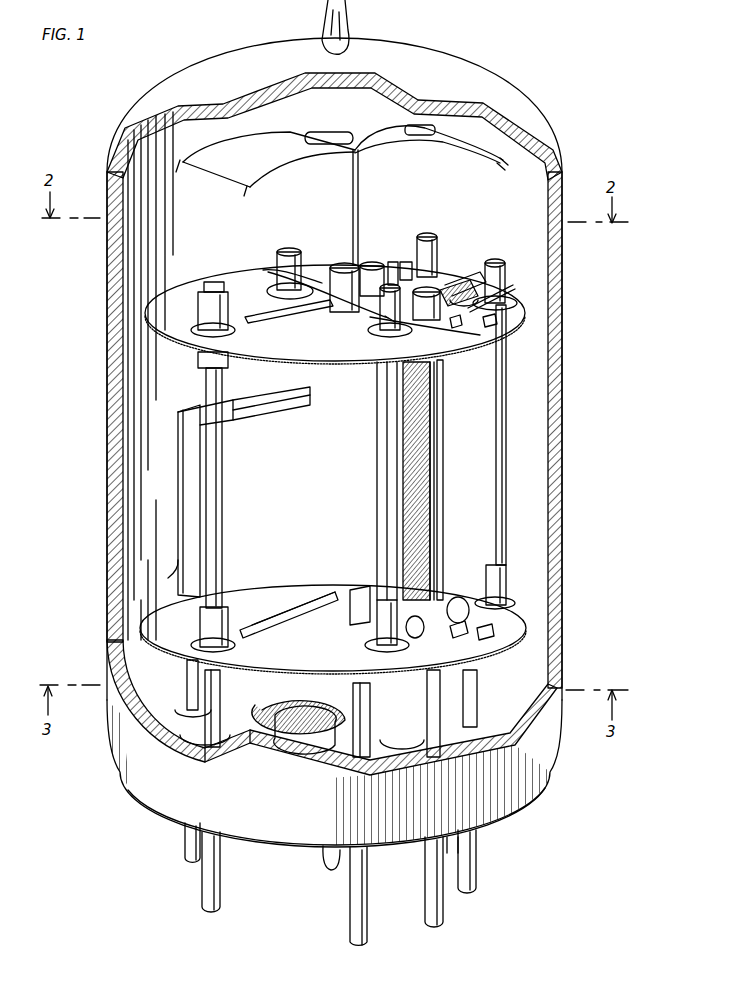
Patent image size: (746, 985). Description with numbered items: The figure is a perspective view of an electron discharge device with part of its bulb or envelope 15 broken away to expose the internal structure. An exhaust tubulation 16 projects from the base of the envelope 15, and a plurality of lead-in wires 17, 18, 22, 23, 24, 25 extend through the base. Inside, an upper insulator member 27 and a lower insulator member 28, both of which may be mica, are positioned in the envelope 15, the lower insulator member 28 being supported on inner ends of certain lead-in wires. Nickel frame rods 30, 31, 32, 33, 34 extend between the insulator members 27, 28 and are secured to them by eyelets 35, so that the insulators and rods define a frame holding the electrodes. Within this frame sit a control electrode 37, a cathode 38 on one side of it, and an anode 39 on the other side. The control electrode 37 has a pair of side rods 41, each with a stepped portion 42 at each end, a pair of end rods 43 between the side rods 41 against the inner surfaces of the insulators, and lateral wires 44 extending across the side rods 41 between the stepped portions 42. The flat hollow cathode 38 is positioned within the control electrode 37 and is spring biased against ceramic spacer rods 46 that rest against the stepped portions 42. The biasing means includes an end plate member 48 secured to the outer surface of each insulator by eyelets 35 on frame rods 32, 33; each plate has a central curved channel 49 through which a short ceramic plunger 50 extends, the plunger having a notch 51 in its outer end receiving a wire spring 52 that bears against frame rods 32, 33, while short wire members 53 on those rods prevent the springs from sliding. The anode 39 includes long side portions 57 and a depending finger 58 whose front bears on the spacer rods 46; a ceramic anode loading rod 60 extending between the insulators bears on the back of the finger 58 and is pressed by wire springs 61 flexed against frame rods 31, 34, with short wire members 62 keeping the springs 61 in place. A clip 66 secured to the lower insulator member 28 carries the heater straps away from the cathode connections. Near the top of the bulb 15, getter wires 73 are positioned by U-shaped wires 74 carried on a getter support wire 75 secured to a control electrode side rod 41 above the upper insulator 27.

The envelope 15 is at (563, 492).
The exhaust tubulation 16 is at (323, 857).
The lead-in wire 17 is at (205, 755).
The lead-in wire 18 is at (188, 686).
The lead-in wire 22 is at (432, 694).
The lead-in wire 23 is at (477, 871).
The lead-in wire 24 is at (443, 924).
The lead-in wire 25 is at (367, 932).
The upper insulator member 27 is at (146, 315).
The lower insulator member 28 is at (150, 615).
The frame rod 30 is at (208, 381).
The frame rod 31 is at (279, 256).
The frame rod 32 is at (427, 233).
The frame rod 33 is at (500, 457).
The frame rod 34 is at (376, 498).
The eyelet 35 is at (205, 314).
The control electrode 37 is at (422, 462).
The cathode 38 is at (393, 260).
The anode 39 is at (265, 450).
The side rod 41 is at (370, 263).
The stepped portion 42 is at (397, 338).
The end rod 43 is at (449, 593).
The lateral wire 44 is at (428, 518).
The spacer rod 46 is at (386, 652).
The end plate member 48 is at (438, 325).
The curved channel 49 is at (457, 283).
The plunger 50 is at (482, 270).
The notch 51 is at (486, 275).
The wire spring 52 is at (442, 270).
The short wire member 53 is at (406, 260).
The long side portion 57 is at (284, 600).
The depending finger 58 is at (356, 616).
The anode loading rod 60 is at (340, 264).
The wire spring 61 is at (336, 318).
The short wire member 62 is at (264, 273).
The clip 66 is at (478, 641).
The getter wire 73 is at (213, 175).
The U-shaped wire 74 is at (345, 140).
The getter support wire 75 is at (360, 170).